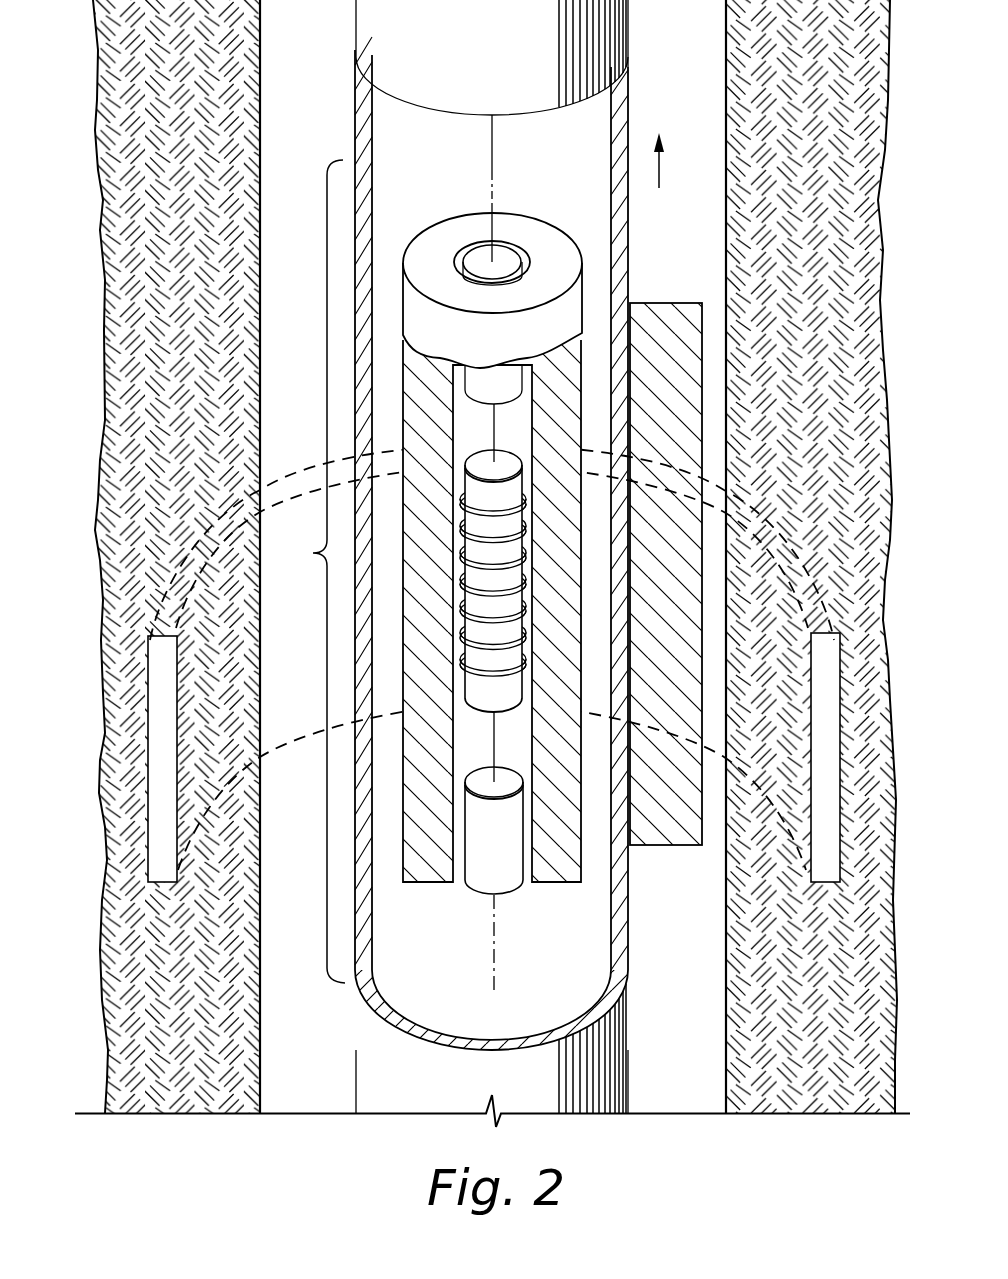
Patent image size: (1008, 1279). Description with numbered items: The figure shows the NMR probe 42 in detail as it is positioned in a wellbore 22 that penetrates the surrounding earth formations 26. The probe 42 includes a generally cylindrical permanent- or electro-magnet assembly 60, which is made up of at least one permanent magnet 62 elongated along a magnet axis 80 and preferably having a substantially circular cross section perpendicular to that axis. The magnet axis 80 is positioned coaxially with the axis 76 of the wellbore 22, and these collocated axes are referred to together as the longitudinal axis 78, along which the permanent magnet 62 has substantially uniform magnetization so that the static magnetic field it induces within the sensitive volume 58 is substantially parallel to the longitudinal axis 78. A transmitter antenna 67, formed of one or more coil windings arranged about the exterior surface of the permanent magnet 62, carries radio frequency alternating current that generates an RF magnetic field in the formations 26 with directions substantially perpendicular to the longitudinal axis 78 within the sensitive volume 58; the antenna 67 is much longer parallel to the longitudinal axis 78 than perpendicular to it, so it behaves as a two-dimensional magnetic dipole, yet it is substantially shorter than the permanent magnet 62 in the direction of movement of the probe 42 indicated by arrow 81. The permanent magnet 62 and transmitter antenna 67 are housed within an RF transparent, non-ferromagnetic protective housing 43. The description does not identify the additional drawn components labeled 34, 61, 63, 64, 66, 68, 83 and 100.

The wellbore 22 is at (306, 647).
The earth formations 26 is at (247, 68).
The tubing string 34 is at (694, 1034).
The NMR probe 42 is at (314, 816).
The protective housing 43 is at (368, 330).
The sensitive volume 58 is at (160, 882).
The magnet assembly 60 is at (314, 571).
The tool body 61 is at (422, 386).
The permanent magnet 62 is at (415, 296).
The aperture 63 is at (500, 258).
The piston 64 is at (513, 885).
The lower magnet 66 is at (512, 670).
The transmitter antenna 67 is at (510, 557).
The upper magnet 68 is at (508, 488).
The axis of the wellbore 76 is at (492, 133).
The longitudinal axis 78 is at (497, 972).
The magnet axis 80 is at (492, 165).
The arrow indicating direction of movement 81 is at (660, 170).
The rod 83 is at (512, 735).
The counterweight block 100 is at (672, 310).